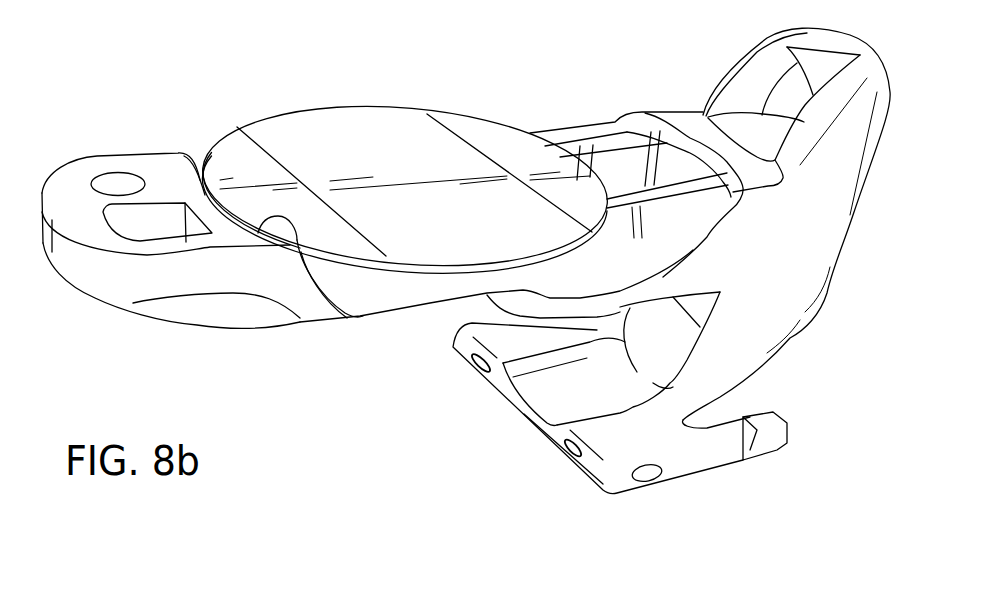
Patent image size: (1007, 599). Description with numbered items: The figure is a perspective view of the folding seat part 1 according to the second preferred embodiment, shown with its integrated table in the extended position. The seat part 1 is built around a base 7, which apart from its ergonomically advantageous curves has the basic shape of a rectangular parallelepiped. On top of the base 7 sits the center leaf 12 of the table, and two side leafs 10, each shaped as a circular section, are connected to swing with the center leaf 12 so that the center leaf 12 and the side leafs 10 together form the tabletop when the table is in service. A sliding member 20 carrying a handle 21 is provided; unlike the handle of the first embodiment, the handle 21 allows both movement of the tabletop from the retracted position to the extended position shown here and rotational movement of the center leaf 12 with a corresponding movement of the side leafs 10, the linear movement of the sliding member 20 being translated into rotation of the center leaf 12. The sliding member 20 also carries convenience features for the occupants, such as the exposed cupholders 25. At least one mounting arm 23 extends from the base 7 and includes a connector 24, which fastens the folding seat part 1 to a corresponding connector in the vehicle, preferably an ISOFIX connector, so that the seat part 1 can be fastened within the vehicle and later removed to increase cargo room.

The folding seat part 1 is at (250, 72).
The base 7 is at (833, 182).
The side leaf 10 is at (228, 148).
The center leaf 12 is at (350, 125).
The sliding member 20 is at (130, 288).
The handle 21 is at (296, 235).
The mounting arm 23 is at (773, 452).
The connector 24 is at (792, 425).
The exposed cupholder 25 is at (106, 185).